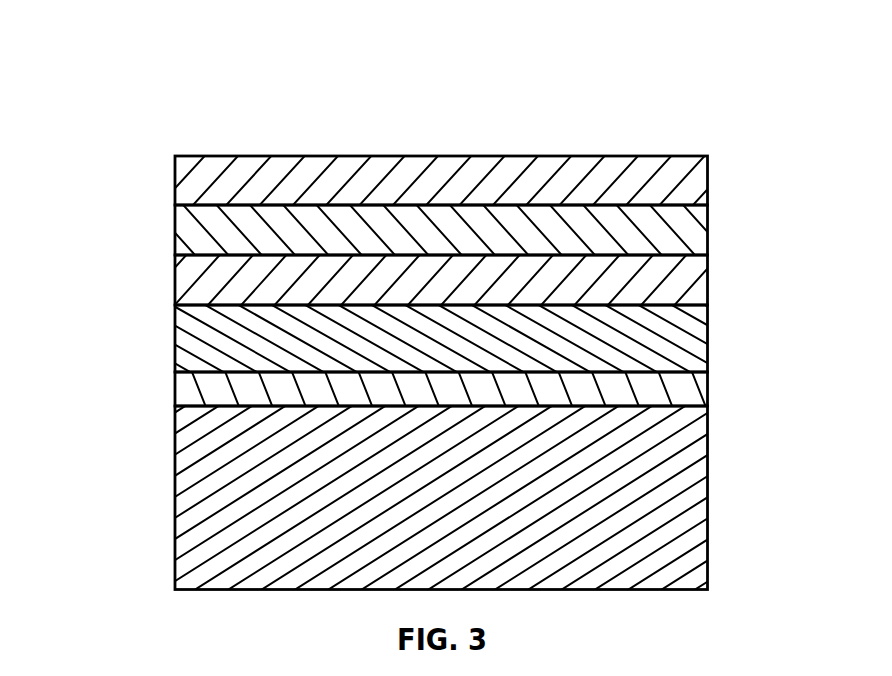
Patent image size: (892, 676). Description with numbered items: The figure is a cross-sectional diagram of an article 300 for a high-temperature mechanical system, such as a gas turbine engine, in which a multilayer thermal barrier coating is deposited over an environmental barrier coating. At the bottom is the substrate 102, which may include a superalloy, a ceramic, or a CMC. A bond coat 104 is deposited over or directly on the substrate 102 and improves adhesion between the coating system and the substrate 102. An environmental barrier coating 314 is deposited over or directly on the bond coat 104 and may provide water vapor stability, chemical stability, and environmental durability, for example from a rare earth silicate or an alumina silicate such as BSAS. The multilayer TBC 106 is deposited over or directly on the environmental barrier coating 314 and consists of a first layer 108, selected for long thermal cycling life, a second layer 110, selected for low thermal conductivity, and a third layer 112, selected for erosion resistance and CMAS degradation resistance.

The article 300 is at (172, 83).
The substrate 102 is at (183, 470).
The bond coat 104 is at (183, 391).
The environmental barrier coating 314 is at (183, 341).
The multilayer TBC 106 is at (168, 157).
The first layer 108 is at (698, 283).
The second layer 110 is at (698, 230).
The third layer 112 is at (698, 181).